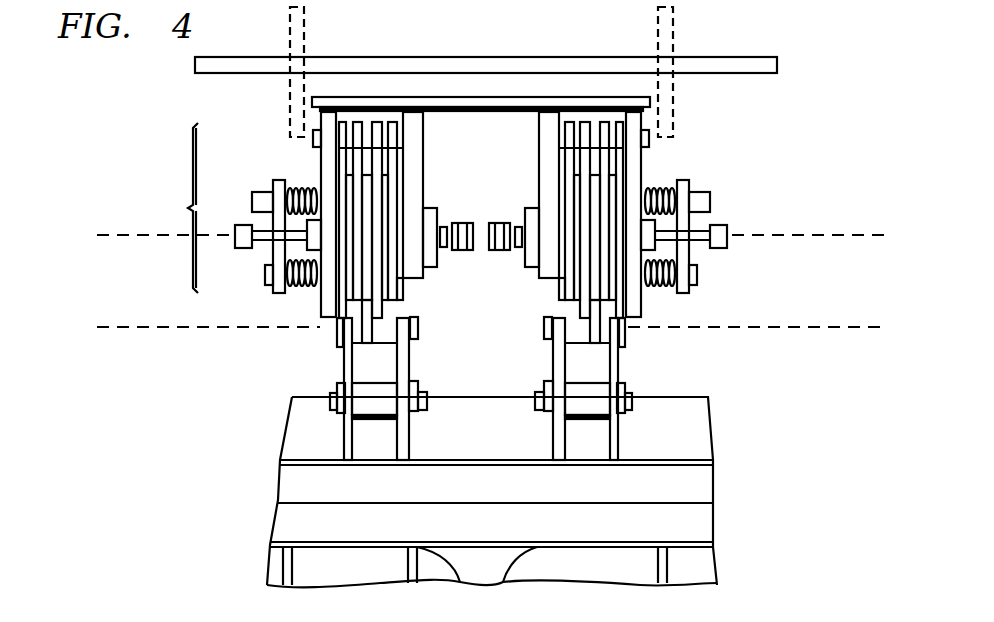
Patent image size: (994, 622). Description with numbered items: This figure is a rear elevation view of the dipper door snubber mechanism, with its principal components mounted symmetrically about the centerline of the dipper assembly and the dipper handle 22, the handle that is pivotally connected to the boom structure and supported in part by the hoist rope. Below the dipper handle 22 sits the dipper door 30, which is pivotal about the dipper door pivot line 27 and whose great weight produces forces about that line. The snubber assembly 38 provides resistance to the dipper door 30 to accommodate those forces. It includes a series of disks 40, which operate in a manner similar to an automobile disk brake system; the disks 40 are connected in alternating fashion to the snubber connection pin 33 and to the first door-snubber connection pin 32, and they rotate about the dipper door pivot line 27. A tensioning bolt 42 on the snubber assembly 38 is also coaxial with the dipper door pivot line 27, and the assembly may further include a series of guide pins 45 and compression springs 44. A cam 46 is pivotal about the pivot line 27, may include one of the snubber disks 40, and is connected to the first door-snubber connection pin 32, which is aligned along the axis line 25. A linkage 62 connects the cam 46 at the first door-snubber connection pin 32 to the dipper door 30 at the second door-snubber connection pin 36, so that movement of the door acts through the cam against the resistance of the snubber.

The dipper handle 22 is at (467, 57).
The axis line 25 is at (120, 316).
The dipper door pivot line 27 is at (120, 224).
The dipper door 30 is at (290, 428).
The first door-snubber connection pin 32 is at (337, 332).
The snubber connection pin 33 is at (313, 145).
The second door-snubber connection pin 36 is at (335, 402).
The snubber assembly 38 is at (421, 208).
The disks 40 is at (378, 122).
The tensioning bolt 42 is at (238, 235).
The compression springs 44 is at (290, 190).
The guide pins 45 is at (252, 198).
The cam 46 is at (338, 344).
The linkage 62 is at (348, 360).